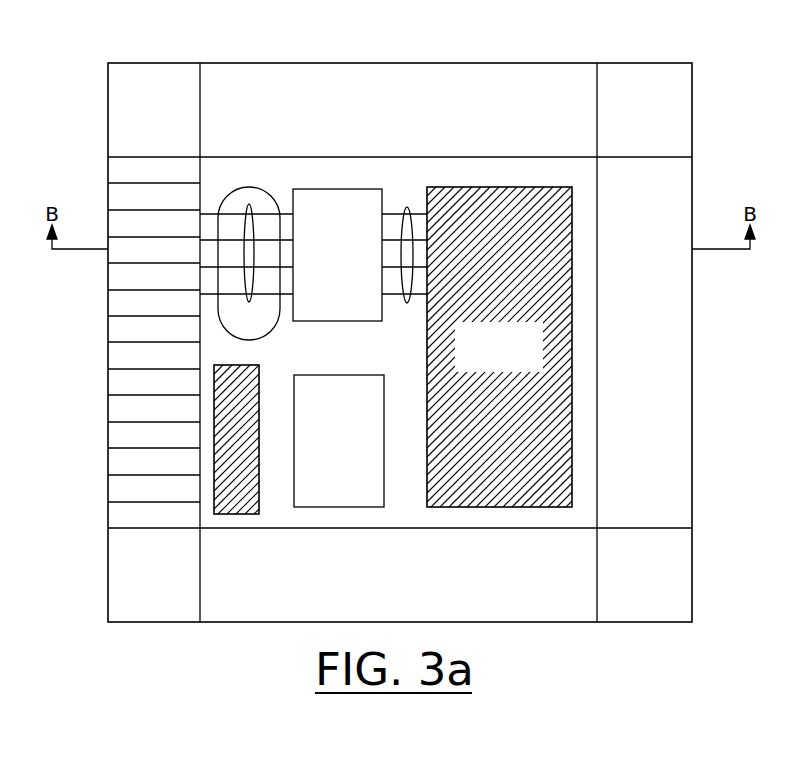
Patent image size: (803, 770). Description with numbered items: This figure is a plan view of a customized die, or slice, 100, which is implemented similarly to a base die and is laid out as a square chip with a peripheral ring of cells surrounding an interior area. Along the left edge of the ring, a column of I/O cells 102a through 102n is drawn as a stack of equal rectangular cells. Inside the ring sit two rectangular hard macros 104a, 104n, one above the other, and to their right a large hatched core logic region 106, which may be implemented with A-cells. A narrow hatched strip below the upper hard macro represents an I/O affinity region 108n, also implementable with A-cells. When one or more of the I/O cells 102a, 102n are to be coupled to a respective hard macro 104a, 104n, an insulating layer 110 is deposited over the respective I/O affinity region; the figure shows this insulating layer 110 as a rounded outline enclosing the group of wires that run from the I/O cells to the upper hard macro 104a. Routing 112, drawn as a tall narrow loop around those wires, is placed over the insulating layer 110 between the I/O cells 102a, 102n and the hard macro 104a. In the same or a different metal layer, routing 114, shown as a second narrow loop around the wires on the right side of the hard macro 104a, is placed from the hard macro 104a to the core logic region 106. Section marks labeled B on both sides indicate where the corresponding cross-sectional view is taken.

The customized die 100 is at (72, 27).
The I/O cell 102a is at (107, 173).
The I/O cell 102n is at (107, 518).
The hard macro 104a is at (343, 189).
The hard macro 104n is at (345, 375).
The core logic region 106 is at (520, 187).
The I/O affinity region 108n is at (253, 365).
The insulating layer 110 is at (261, 187).
The routing 112 is at (247, 302).
The routing 114 is at (410, 303).